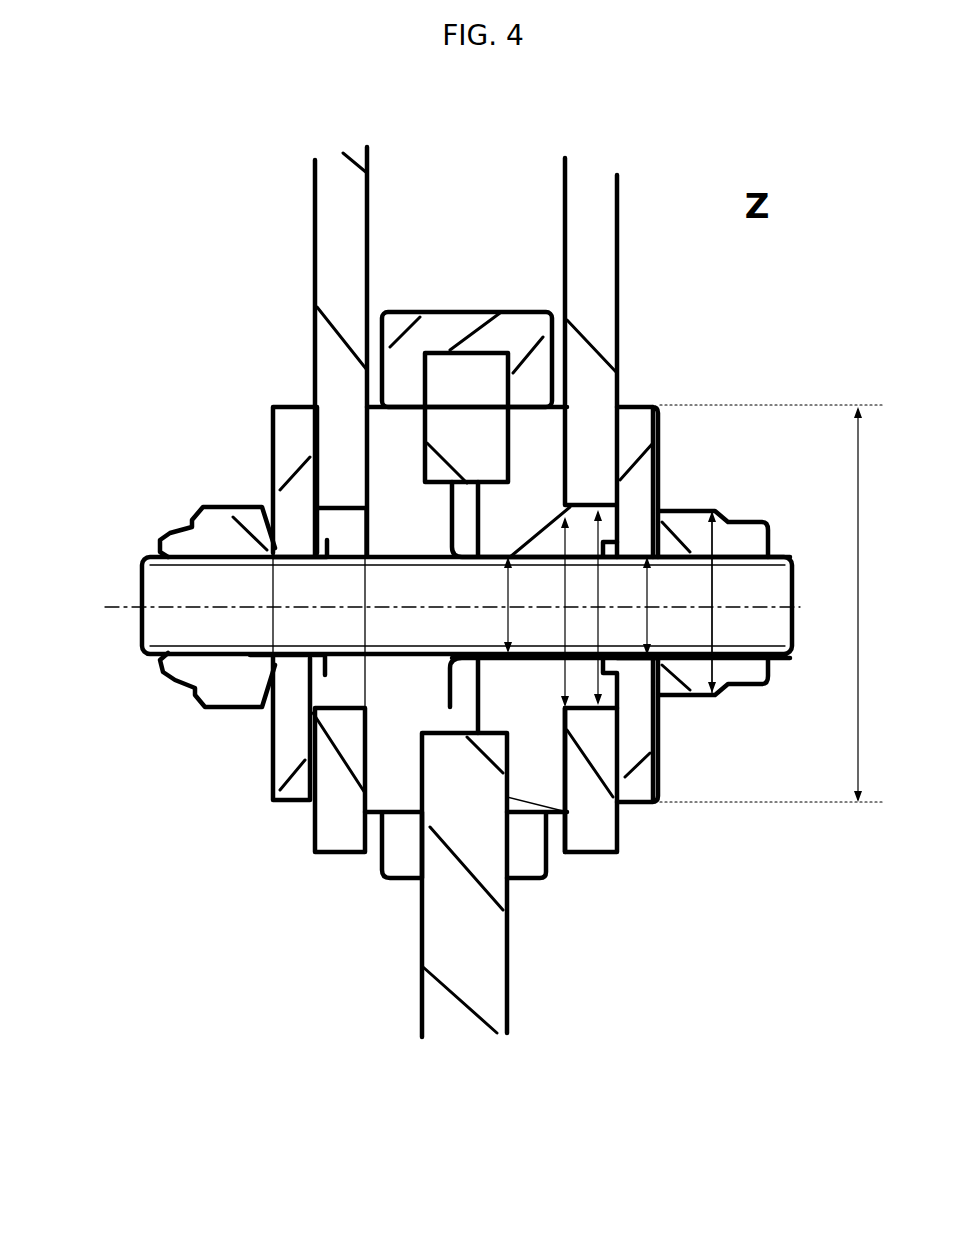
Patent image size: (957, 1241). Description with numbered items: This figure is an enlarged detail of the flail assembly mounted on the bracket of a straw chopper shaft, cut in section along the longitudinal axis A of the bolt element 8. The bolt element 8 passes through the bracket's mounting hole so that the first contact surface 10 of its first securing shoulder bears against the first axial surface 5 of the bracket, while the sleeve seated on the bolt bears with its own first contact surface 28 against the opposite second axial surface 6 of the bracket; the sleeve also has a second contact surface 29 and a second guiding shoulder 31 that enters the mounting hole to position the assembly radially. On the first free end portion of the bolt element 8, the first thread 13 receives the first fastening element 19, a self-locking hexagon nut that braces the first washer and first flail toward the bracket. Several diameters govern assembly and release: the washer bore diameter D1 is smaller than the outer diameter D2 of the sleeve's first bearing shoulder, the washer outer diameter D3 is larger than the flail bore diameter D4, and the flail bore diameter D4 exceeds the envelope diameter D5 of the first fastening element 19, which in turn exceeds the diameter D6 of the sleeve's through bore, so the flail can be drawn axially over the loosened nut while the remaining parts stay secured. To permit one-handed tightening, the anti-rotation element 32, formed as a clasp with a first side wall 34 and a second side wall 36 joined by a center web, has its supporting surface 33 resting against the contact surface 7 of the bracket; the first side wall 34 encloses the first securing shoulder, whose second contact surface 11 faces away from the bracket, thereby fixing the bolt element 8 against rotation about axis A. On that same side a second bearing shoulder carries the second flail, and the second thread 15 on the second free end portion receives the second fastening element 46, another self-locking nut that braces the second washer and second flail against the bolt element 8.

The first axial surface of the bracket 5 is at (423, 1030).
The second axial surface of the bracket 6 is at (503, 1020).
The contact surface of the bracket 7 is at (545, 310).
The bolt element 8 is at (140, 623).
The first contact surface 10 is at (423, 430).
The second contact surface 11 is at (360, 385).
The first thread 13 is at (790, 557).
The second thread 15 is at (157, 663).
The first fastening element 19 is at (745, 672).
The first contact surface 28 is at (365, 817).
The second contact surface 29 is at (423, 813).
The second guiding shoulder 31 is at (490, 523).
The anti-rotation element 32 is at (500, 340).
The supporting surface 33 is at (362, 362).
The first side wall 34 is at (400, 880).
The second side wall 36 is at (543, 870).
The second fastening element 46 is at (167, 537).
The longitudinal axis of the bolt element A is at (434, 607).
The bore diameter of the first washer D1 is at (632, 606).
The outer diameter of the first bearing shoulder D2 is at (550, 612).
The outer diameter of the first washer D3 is at (772, 603).
The bore diameter of the first flail D4 is at (583, 607).
The diameter of the first fastening element envelope D5 is at (695, 602).
The diameter of the through bore of the sleeve D6 is at (490, 605).